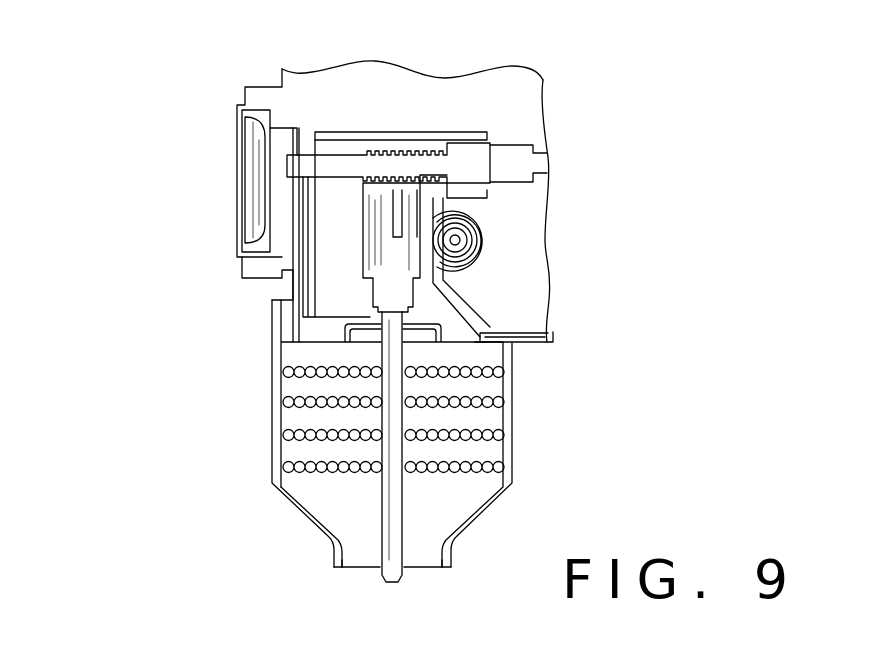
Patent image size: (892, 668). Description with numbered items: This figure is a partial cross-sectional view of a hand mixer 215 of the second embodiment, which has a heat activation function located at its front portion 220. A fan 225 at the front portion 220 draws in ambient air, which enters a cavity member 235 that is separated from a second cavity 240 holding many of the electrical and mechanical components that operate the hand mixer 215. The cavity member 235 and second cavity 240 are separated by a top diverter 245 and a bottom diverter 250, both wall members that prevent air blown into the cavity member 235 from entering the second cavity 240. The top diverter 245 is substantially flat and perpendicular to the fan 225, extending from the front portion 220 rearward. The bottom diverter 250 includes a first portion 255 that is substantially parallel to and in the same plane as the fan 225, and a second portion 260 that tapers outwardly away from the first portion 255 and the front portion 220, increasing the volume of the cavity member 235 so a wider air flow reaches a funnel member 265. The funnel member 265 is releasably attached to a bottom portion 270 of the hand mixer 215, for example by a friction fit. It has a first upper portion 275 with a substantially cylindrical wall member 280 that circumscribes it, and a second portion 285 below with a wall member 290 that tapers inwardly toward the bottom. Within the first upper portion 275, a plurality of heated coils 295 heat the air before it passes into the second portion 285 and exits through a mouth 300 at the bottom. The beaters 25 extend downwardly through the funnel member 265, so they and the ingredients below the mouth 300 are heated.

The hand mixer 215 is at (598, 118).
The second cavity 240 is at (490, 107).
The top diverter 245 is at (393, 133).
The cavity member 235 is at (342, 205).
The fan 225 is at (262, 168).
The front portion 220 is at (222, 272).
The first portion 255 is at (447, 199).
The bottom diverter 250 is at (458, 280).
The second portion 260 is at (480, 323).
The bottom portion 270 is at (528, 357).
The cylindrical wall member 280 is at (272, 328).
The first upper portion 275 is at (268, 382).
The funnel member 265 is at (265, 447).
The heated coils 295 is at (300, 463).
The second portion 285 is at (510, 507).
The wall member 290 is at (463, 542).
The mouth 300 is at (357, 570).
The beaters 25 is at (390, 540).